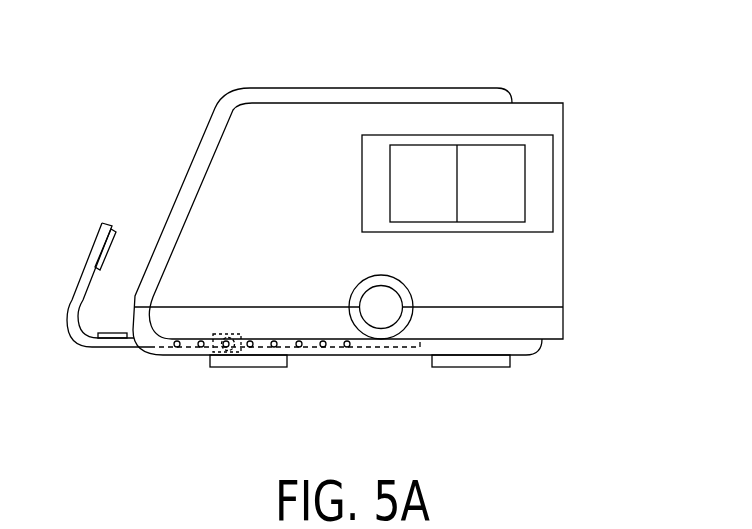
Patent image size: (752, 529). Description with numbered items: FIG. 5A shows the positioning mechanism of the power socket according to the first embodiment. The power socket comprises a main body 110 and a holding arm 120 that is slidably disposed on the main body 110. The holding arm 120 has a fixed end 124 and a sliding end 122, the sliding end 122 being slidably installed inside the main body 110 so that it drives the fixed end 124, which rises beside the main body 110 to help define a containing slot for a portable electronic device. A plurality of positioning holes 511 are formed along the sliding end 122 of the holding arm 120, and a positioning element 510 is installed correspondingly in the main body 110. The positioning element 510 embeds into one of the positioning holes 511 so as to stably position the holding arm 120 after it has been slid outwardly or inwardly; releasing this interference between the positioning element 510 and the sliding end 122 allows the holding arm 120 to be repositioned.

The main body 110 is at (200, 132).
The holding arm 120 is at (236, 301).
The sliding end 122 is at (134, 348).
The fixed end 124 is at (83, 263).
The positioning element 510 is at (223, 353).
The positioning holes 511 is at (179, 350).